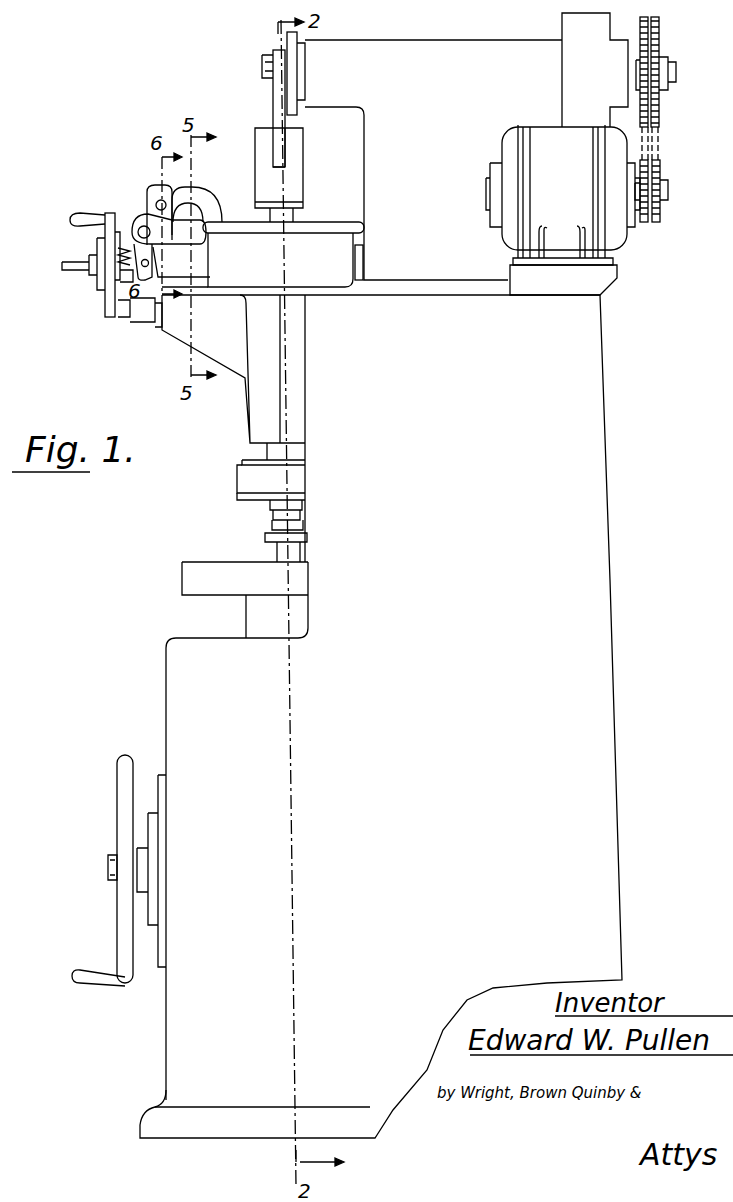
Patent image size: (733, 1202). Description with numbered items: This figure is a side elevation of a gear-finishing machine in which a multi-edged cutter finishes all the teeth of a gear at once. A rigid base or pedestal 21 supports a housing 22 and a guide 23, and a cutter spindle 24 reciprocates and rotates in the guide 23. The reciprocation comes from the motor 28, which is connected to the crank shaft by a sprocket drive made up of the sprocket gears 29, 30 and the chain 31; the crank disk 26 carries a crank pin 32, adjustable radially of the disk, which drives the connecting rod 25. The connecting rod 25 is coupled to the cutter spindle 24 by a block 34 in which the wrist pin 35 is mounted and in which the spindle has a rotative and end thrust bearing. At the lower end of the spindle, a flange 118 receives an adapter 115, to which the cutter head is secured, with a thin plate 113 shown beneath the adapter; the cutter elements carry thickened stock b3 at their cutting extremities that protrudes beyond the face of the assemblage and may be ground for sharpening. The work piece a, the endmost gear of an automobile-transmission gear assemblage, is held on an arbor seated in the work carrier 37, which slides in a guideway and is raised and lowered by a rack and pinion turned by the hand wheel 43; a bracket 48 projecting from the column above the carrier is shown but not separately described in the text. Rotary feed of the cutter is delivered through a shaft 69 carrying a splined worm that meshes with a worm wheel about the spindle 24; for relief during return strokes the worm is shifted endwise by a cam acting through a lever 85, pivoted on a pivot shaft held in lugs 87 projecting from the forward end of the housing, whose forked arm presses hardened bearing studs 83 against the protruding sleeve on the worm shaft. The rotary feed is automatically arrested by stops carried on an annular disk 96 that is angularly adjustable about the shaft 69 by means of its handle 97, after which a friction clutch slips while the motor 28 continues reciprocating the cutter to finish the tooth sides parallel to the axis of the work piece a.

The base or pedestal 21 is at (612, 640).
The housing 22 is at (427, 55).
The guide 23 is at (262, 383).
The cutter spindle 24 is at (268, 453).
The connecting rod 25 is at (273, 95).
The crank disk 26 is at (292, 62).
The motor 28 is at (563, 210).
The sprocket gear 29 is at (660, 170).
The sprocket gear 30 is at (660, 100).
The chain 31 is at (658, 138).
The crank pin 32 is at (262, 68).
The block 34 is at (262, 180).
The wrist pin 35 is at (293, 152).
The work carrier 37 is at (247, 618).
The hand wheel 43 is at (127, 937).
The table bracket 48 is at (184, 578).
The shaft 69 is at (80, 267).
The bearing studs 83 is at (176, 262).
The lever 85 is at (150, 190).
The lugs 87 is at (137, 226).
The annular disk 96 is at (112, 303).
The handle 97 is at (85, 213).
The plate 113 is at (240, 498).
The adapter 115 is at (246, 476).
The flange 118 is at (305, 463).
The work piece a is at (273, 514).
The cutter stock b3 is at (303, 504).